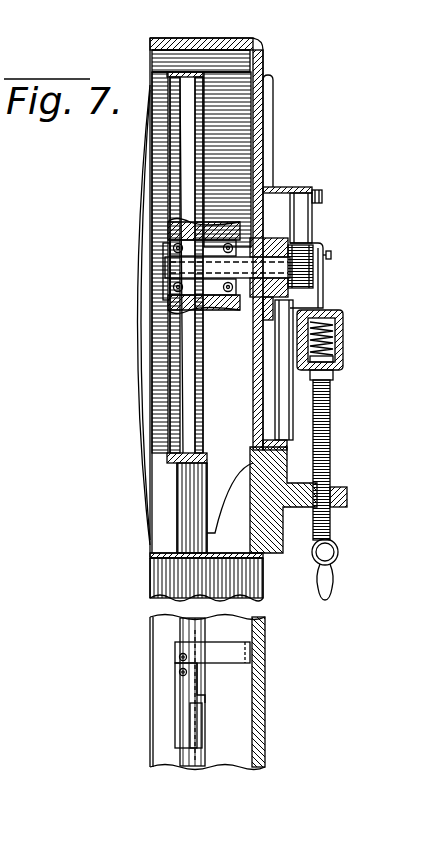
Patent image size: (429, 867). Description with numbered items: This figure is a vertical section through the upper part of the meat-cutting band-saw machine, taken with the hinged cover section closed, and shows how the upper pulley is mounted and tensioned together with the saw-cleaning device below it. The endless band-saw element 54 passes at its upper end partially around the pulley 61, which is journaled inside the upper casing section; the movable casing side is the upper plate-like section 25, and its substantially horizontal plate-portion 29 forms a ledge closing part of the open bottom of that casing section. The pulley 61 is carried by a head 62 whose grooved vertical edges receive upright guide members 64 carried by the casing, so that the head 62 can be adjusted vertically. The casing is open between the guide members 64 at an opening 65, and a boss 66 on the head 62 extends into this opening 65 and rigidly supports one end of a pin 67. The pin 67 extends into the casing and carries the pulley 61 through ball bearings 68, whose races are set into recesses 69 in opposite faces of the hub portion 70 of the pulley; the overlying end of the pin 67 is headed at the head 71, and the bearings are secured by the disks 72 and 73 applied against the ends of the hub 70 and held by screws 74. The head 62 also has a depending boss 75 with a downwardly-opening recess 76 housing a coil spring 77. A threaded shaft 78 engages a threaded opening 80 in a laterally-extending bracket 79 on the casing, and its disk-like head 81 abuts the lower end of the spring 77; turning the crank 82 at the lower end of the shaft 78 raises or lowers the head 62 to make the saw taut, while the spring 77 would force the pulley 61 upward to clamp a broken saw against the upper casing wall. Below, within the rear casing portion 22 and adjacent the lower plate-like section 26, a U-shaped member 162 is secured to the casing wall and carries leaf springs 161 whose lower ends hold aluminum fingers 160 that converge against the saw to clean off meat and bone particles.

The casing portion 22 is at (265, 677).
The upper plate-like section 25 is at (158, 493).
The lower plate-like section 26 is at (179, 661).
The plate-portion 29 is at (150, 572).
The band-saw element 54 is at (185, 512).
The pulley 61 is at (168, 447).
The head 62 is at (322, 302).
The upright guide members 64 is at (303, 235).
The opening 65 is at (278, 394).
The boss 66 is at (291, 238).
The pin 67 is at (254, 322).
The ball bearings 68 is at (174, 299).
The recesses 69 is at (226, 243).
The hub portion 70 is at (200, 233).
The head of pin 71 is at (170, 268).
The disk 72 is at (279, 201).
The disk 73 is at (170, 247).
The screws 74 is at (171, 309).
The depending boss 75 is at (340, 335).
The recess 76 is at (340, 360).
The coil spring 77 is at (345, 316).
The threaded shaft 78 is at (331, 412).
The bracket 79 is at (348, 497).
The threaded opening 80 is at (333, 490).
The disk-like head 81 is at (331, 383).
The crank 82 is at (334, 578).
The fingers 160 is at (191, 725).
The leaf springs 161 is at (184, 690).
The U-shaped member 162 is at (230, 652).